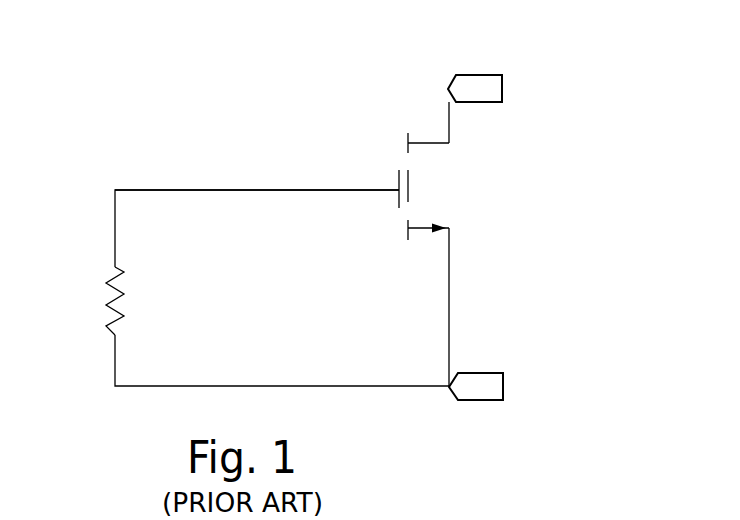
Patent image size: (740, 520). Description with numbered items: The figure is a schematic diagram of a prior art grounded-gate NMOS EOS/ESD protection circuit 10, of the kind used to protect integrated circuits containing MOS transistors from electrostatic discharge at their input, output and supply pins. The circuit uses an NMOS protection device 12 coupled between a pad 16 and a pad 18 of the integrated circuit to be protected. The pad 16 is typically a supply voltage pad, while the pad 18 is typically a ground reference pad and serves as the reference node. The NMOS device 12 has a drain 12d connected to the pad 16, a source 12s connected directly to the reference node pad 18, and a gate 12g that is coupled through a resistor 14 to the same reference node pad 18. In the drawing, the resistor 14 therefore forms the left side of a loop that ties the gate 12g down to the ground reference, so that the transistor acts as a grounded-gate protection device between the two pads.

The EOS/ESD protection circuit 10 is at (575, 124).
The NMOS protection device 12 is at (318, 211).
The drain 12d is at (427, 143).
The gate 12g is at (399, 181).
The source 12s is at (422, 230).
The resistor 14 is at (113, 277).
The pad 16 is at (483, 75).
The pad 18 is at (504, 373).